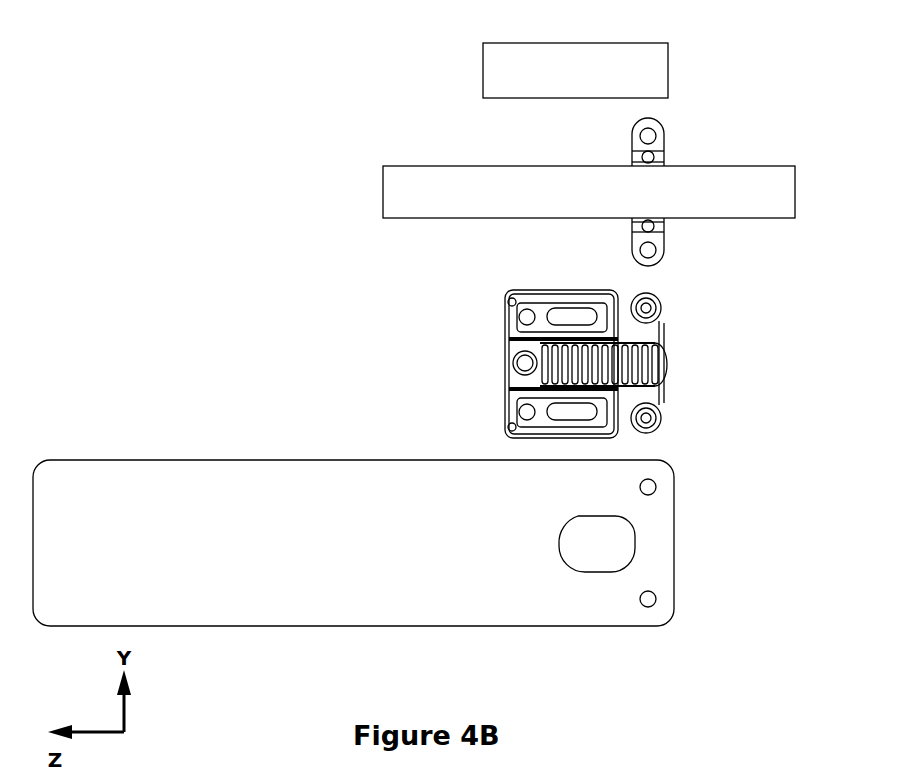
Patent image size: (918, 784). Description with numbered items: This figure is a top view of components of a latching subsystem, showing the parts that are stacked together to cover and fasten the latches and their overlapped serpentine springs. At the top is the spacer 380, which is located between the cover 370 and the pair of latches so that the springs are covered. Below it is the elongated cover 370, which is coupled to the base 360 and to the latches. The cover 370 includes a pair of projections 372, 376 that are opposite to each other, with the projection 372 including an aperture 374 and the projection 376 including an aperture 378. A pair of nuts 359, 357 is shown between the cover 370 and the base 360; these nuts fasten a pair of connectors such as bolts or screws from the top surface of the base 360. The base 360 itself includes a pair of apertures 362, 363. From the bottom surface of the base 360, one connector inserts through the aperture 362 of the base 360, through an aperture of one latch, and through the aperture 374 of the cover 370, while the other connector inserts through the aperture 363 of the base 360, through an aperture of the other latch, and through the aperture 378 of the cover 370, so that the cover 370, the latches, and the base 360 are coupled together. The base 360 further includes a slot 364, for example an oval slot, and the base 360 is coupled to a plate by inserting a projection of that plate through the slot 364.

The spacer 380 is at (632, 50).
The cover 370 is at (732, 175).
The projection 372 is at (664, 133).
The aperture 374 is at (635, 135).
The projection 376 is at (662, 253).
The aperture 378 is at (633, 248).
The nut 359 is at (662, 315).
The nut 357 is at (662, 417).
The base 360 is at (188, 475).
The aperture 362 is at (657, 482).
The aperture 363 is at (657, 595).
The slot 364 is at (592, 555).